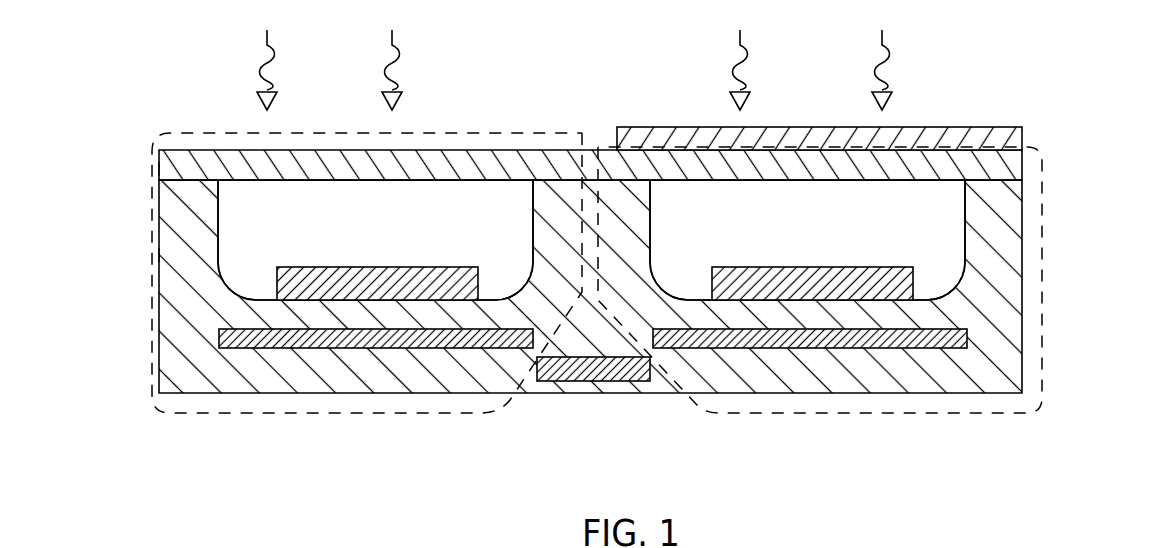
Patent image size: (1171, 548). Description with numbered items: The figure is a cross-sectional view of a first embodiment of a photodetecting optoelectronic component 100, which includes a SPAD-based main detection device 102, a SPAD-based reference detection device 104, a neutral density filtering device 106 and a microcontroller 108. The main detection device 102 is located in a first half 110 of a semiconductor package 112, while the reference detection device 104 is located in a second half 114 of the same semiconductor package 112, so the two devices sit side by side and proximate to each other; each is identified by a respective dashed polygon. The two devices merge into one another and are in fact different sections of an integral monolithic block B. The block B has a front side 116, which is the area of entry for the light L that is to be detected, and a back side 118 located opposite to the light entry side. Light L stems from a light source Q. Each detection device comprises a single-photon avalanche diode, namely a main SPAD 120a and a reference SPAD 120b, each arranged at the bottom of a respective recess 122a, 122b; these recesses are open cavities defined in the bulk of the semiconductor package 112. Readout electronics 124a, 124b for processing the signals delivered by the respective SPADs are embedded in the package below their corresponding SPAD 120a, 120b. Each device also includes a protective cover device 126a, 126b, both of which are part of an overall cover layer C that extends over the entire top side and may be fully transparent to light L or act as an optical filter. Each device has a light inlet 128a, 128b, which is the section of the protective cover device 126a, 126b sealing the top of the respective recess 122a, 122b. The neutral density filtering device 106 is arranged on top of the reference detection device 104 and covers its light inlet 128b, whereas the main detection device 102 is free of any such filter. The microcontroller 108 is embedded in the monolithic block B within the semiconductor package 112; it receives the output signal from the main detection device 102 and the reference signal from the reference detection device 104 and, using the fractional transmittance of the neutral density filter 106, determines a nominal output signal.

The photodetecting optoelectronic component 100 is at (1097, 86).
The main detection device 102 is at (172, 133).
The reference detection device 104 is at (1043, 173).
The neutral density filtering device 106 is at (657, 145).
The microcontroller 108 is at (621, 372).
The first half 110 is at (169, 434).
The semiconductor package 112 is at (159, 375).
The second half 114 is at (972, 429).
The front side 116 is at (533, 92).
The back side 118 is at (540, 393).
The main SPAD 120a is at (297, 275).
The reference SPAD 120b is at (894, 275).
The recess 122a is at (403, 226).
The recess 122b is at (812, 226).
The readout electronics 124a is at (358, 340).
The readout electronics 124b is at (823, 340).
The protective cover device 126a is at (327, 163).
The protective cover device 126b is at (957, 163).
The light inlet 128a is at (462, 150).
The light inlet 128b is at (797, 150).
The light L is at (574, 66).
The monolithic block B is at (165, 255).
The cover layer C is at (165, 168).
The light source Q is at (25, 547).